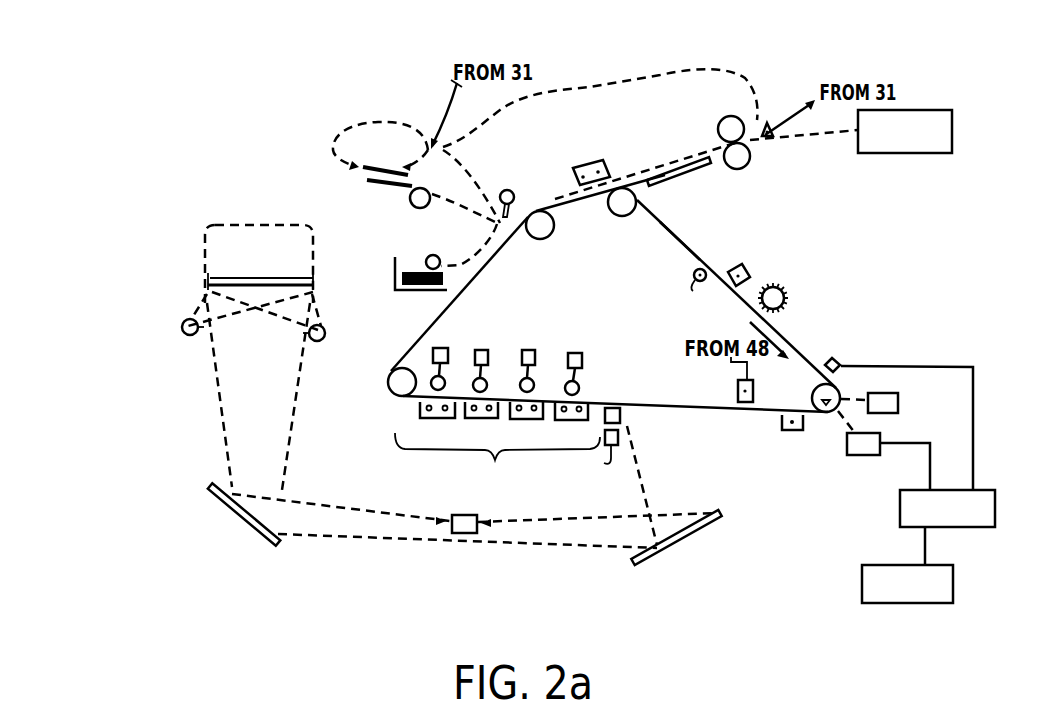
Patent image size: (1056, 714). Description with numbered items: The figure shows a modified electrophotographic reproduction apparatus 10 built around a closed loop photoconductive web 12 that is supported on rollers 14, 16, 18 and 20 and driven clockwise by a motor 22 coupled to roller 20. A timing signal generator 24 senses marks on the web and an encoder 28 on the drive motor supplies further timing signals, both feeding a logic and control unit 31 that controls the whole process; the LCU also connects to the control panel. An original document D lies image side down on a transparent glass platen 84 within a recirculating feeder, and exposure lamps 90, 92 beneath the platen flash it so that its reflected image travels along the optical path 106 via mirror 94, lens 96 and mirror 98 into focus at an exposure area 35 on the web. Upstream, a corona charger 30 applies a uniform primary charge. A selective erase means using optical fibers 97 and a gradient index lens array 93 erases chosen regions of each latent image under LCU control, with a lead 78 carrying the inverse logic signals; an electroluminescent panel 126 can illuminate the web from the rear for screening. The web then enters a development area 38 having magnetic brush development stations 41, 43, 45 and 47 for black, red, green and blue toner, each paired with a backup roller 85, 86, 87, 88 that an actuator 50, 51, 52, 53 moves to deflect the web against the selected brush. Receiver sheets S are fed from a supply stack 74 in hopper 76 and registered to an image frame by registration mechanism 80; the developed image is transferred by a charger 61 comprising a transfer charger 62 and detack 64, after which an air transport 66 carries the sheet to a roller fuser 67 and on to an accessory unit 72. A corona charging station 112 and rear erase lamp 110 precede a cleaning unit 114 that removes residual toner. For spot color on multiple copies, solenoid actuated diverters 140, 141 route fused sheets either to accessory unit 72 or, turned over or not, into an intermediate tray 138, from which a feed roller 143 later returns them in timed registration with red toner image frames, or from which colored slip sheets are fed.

The apparatus 10 is at (818, 263).
The photoconductive web 12 is at (686, 242).
The roller 14 is at (622, 216).
The roller 16 is at (540, 239).
The roller 18 is at (388, 394).
The roller 20 is at (810, 392).
The motor 22 is at (898, 402).
The timing signal generator 24 is at (828, 358).
The encoder 28 is at (855, 455).
The corona charger 30 is at (790, 432).
The logic and control unit 31 is at (995, 507).
The exposure area 35 is at (673, 419).
The development area 38 is at (497, 461).
The development station 41 is at (434, 418).
The development station 43 is at (480, 418).
The development station 45 is at (530, 420).
The development station 47 is at (579, 421).
The actuator 50 is at (447, 354).
The actuator 51 is at (489, 355).
The actuator 52 is at (536, 356).
The actuator 53 is at (583, 357).
The charger 61 is at (598, 150).
The transfer charger 62 is at (581, 162).
The detack 64 is at (611, 173).
The air transport 66 is at (693, 165).
The roller fuser 67 is at (760, 158).
The accessory finishing unit 72 is at (955, 130).
The supply stack 74 is at (408, 271).
The hopper 76 is at (392, 273).
The lead 78 is at (427, 256).
The registration mechanism 80 is at (511, 190).
The transparent glass platen 84 is at (315, 288).
The backup roller 85 is at (446, 384).
The backup roller 86 is at (488, 386).
The backup roller 87 is at (535, 388).
The backup roller 88 is at (580, 390).
The exposure lamp 90 is at (326, 333).
The exposure lamp 92 is at (182, 329).
The gradient index lens array 93 is at (622, 415).
The mirror 94 is at (253, 528).
The lens 96 is at (465, 534).
The optical fibers 97 is at (608, 463).
The mirror 98 is at (695, 543).
The light beam 106 is at (368, 510).
The rear erase lamp 110 is at (692, 294).
The corona charging station 112 is at (744, 270).
The cleaning unit 114 is at (790, 298).
The electroluminescent panel 126 is at (738, 386).
The intermediate tray 138 is at (366, 181).
The diverter 140 is at (767, 120).
The diverter 141 is at (429, 146).
The feed roller 143 is at (410, 198).